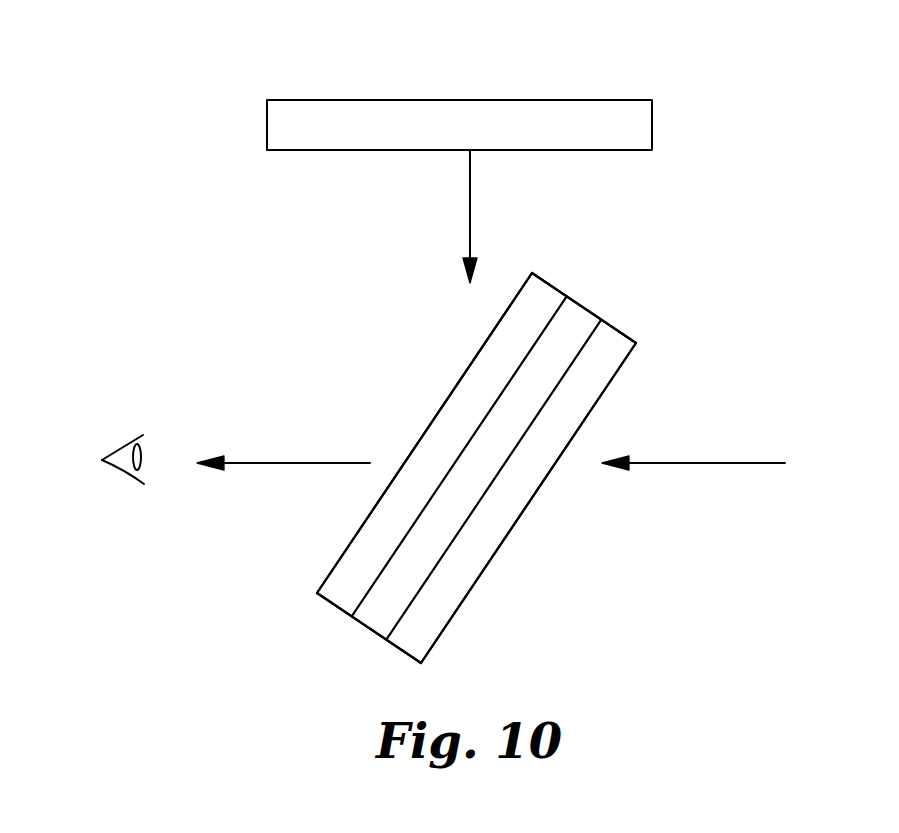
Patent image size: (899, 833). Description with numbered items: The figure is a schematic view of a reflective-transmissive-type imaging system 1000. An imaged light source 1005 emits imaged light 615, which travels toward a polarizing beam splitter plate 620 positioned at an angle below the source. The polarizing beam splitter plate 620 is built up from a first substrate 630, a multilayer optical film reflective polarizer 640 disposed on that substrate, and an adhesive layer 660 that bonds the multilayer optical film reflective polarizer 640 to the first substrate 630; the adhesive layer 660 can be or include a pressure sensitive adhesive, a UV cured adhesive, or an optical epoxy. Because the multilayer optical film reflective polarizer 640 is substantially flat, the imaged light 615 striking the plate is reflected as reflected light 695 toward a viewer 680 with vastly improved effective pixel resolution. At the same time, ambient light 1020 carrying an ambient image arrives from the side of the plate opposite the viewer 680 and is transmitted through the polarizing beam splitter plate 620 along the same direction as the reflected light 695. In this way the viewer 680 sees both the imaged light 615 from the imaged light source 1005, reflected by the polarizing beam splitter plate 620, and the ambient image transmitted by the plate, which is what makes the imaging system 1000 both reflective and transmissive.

The reflective-transmissive-type imaging system 1000 is at (190, 60).
The imaged light source 1005 is at (636, 122).
The imaged light 615 is at (470, 203).
The polarizing beam splitter plate 620 is at (326, 644).
The first substrate 630 is at (548, 283).
The adhesive layer 660 is at (587, 305).
The multilayer optical film reflective polarizer 640 is at (620, 331).
The reflected light 695 is at (308, 462).
The ambient light 1020 is at (670, 462).
The viewer 680 is at (118, 470).